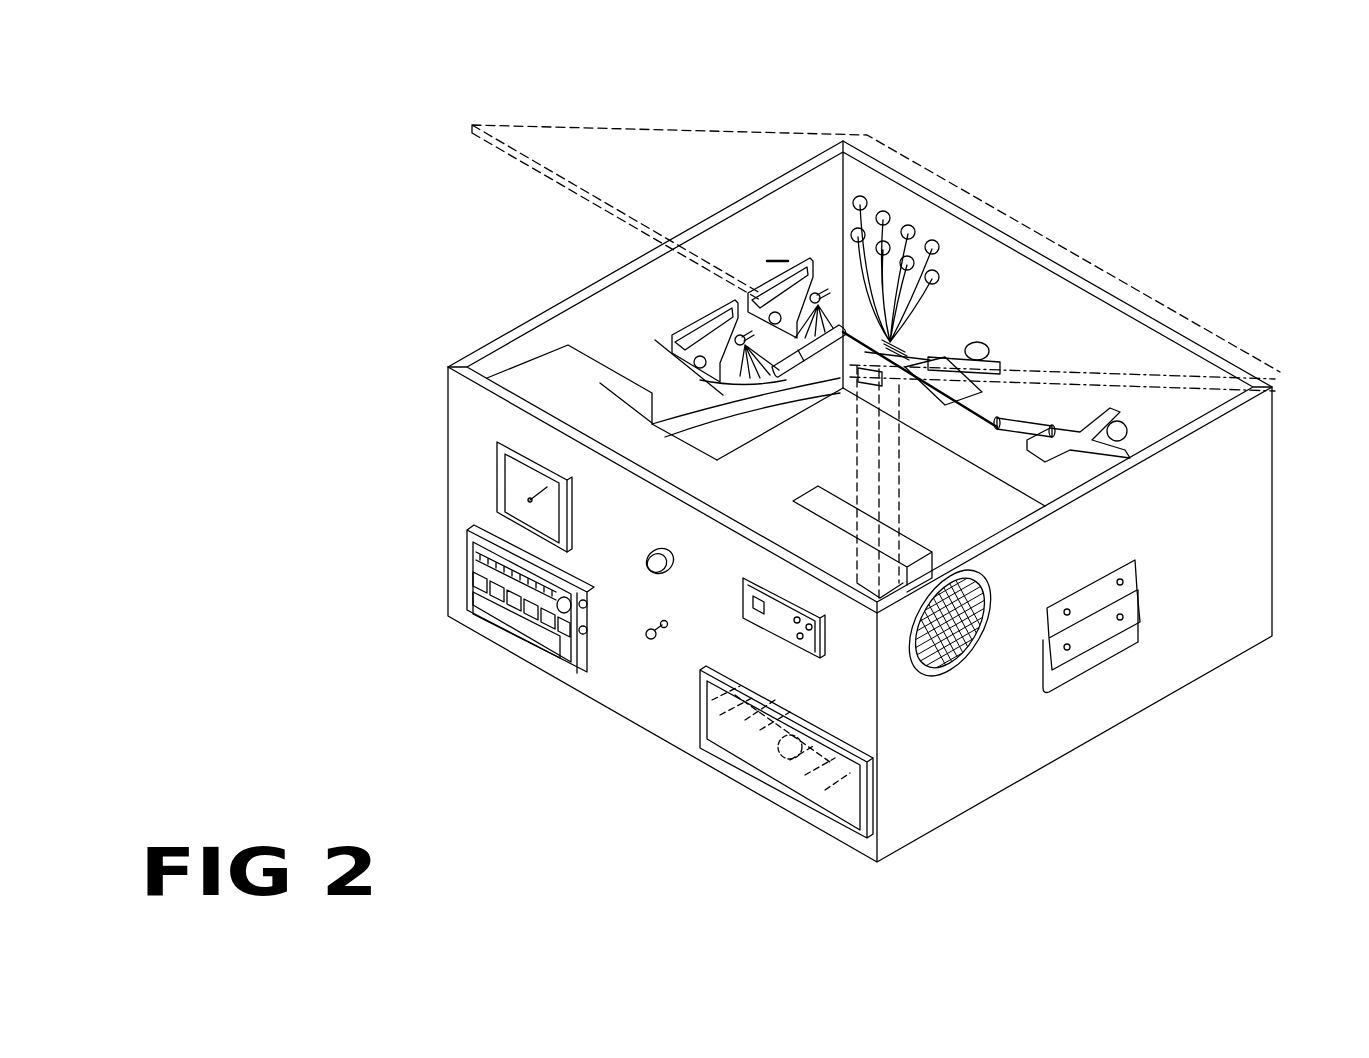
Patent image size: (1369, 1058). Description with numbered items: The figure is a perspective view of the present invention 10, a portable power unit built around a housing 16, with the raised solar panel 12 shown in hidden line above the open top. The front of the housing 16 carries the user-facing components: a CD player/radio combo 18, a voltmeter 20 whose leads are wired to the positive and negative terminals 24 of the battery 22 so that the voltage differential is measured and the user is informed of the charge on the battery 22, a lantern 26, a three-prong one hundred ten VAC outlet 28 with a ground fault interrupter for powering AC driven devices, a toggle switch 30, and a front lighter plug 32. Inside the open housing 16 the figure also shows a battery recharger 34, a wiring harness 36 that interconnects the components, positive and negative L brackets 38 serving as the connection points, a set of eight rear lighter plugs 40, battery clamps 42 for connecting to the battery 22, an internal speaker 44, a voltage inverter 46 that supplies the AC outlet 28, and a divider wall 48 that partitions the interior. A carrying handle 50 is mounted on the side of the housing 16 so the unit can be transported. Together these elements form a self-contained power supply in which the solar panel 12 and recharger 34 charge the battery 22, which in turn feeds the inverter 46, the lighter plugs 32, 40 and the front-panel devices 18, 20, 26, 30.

The present invention 10 is at (1097, 833).
The raised solar panel 12 is at (805, 135).
The housing 16 is at (858, 683).
The CD player/radio combo 18 is at (470, 610).
The voltmeter 20 is at (500, 483).
The battery 22 is at (998, 317).
The terminals 24 is at (1143, 433).
The lantern 26 is at (778, 788).
The three-prong 110 VAC outlet 28 is at (777, 638).
The indicator light 30 is at (656, 633).
The front lighter plug 32 is at (657, 578).
The battery recharger 34 is at (567, 363).
The wiring harness 36 is at (720, 392).
The positive and negative L brackets 38 is at (770, 275).
The eight rear lighter plugs 40 is at (957, 252).
The battery clamps 42 is at (1097, 413).
The internal speaker 44 is at (957, 673).
The voltage inverter 46 is at (933, 557).
The divider wall 48 is at (1007, 493).
The carrying handle 50 is at (1143, 615).